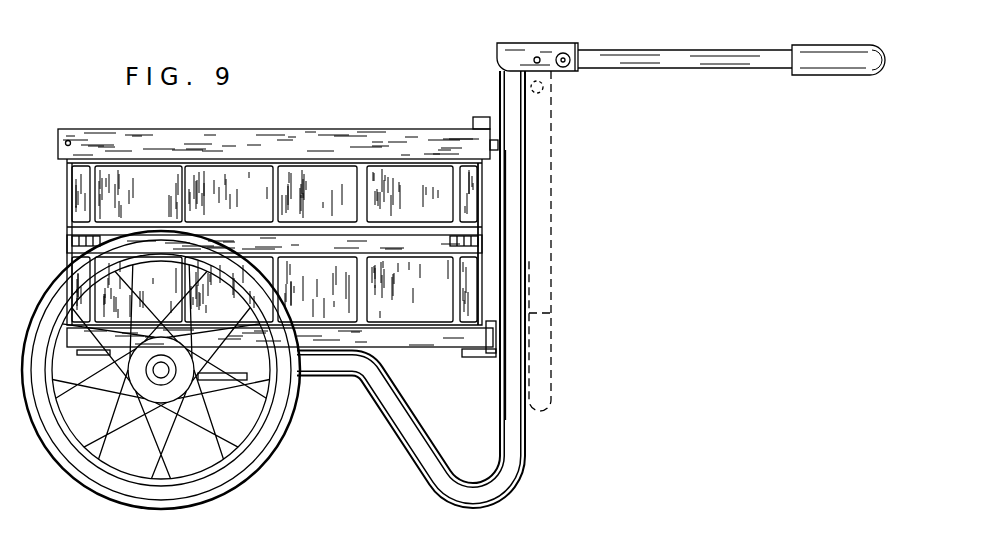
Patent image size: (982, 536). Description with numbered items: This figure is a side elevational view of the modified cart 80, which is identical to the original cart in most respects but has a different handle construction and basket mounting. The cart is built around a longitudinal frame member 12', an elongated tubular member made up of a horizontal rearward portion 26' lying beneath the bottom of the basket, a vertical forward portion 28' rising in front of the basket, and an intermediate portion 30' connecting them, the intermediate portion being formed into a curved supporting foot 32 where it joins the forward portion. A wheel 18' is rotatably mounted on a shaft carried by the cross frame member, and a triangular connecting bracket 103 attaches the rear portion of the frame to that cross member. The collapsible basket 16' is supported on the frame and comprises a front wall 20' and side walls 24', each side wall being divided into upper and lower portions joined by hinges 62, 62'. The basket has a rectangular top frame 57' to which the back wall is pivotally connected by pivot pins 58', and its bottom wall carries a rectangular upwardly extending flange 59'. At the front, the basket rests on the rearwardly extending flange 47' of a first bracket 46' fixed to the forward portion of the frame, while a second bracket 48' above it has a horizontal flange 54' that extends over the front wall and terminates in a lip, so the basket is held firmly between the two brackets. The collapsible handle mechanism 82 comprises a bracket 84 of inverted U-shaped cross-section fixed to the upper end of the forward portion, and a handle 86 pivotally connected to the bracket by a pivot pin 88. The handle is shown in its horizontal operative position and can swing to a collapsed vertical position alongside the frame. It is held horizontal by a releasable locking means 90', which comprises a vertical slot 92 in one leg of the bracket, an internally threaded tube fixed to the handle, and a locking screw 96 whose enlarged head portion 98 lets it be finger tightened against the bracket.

The collapsible basket 16' is at (320, 232).
The rectangular top frame 57' is at (274, 123).
The pivot pins 58' is at (76, 117).
The rearwardly extending horizontal flange 54' is at (469, 107).
The second bracket 48' is at (544, 152).
The modified cart 80 is at (318, 195).
The side walls 24' is at (338, 198).
The hinges 62 is at (257, 226).
The hinges 62' is at (524, 244).
The front wall 20' is at (538, 244).
The rectangular upwardly extending flange 59' is at (280, 358).
The first bracket 46' is at (547, 330).
The rearwardly extending flange 47' is at (475, 373).
The longitudinal frame member 12' is at (451, 294).
The horizontal rearward portion 26' is at (431, 294).
The intermediate portion 30' is at (431, 294).
The curved supporting foot 32 is at (514, 489).
The vertical forward portion 28' is at (553, 285).
The wheel 18' is at (187, 370).
The connecting bracket 103 is at (245, 382).
The collapsible handle mechanism 82 is at (670, 213).
The bracket 84 is at (537, 75).
The pivot pin 88 is at (537, 57).
The enlarged head portion 98 is at (570, 54).
The vertical slot 92 is at (572, 72).
The releasable locking means 90' is at (571, 108).
The locking screw 96 is at (612, 45).
The handle 86 is at (763, 62).